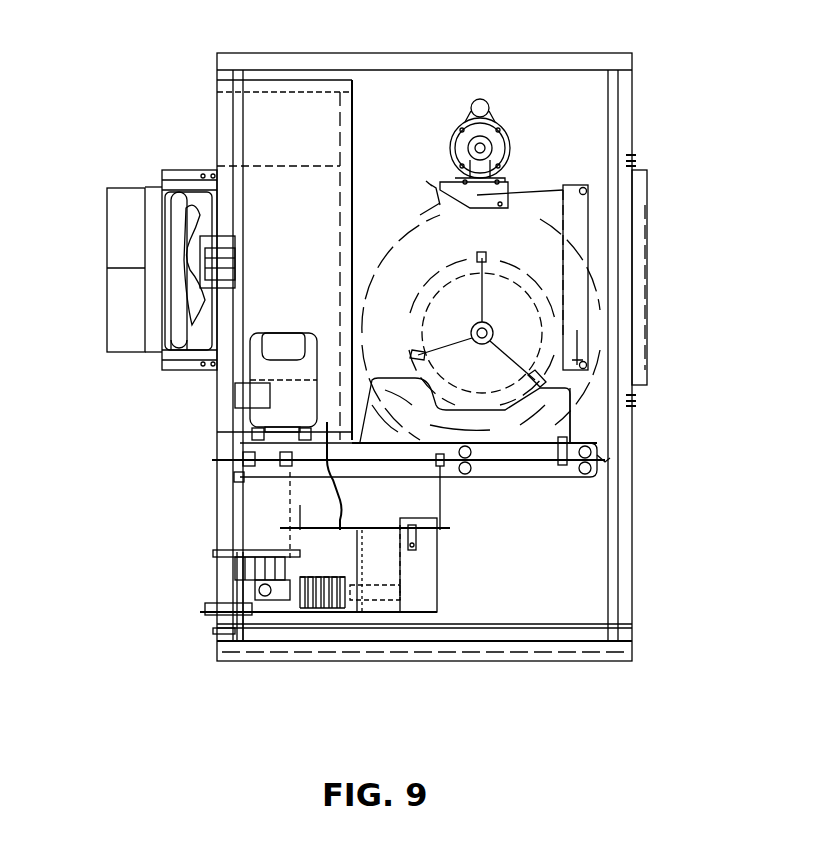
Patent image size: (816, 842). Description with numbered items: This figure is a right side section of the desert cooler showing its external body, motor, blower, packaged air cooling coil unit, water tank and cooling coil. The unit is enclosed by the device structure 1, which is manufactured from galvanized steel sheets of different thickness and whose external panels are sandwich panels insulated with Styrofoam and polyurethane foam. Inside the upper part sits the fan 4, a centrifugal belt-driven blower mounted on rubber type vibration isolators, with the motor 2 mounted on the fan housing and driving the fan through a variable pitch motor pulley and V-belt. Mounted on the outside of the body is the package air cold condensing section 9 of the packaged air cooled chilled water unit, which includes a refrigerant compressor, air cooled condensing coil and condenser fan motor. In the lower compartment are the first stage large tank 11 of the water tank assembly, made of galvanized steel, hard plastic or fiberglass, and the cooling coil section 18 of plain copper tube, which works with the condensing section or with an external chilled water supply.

The device structure 1 is at (538, 661).
The motor 2 is at (468, 116).
The fan 4 is at (545, 222).
The package air cold condensing section 9 is at (128, 222).
The first stage large tank 11 is at (437, 586).
The cooling coil section 18 is at (325, 608).